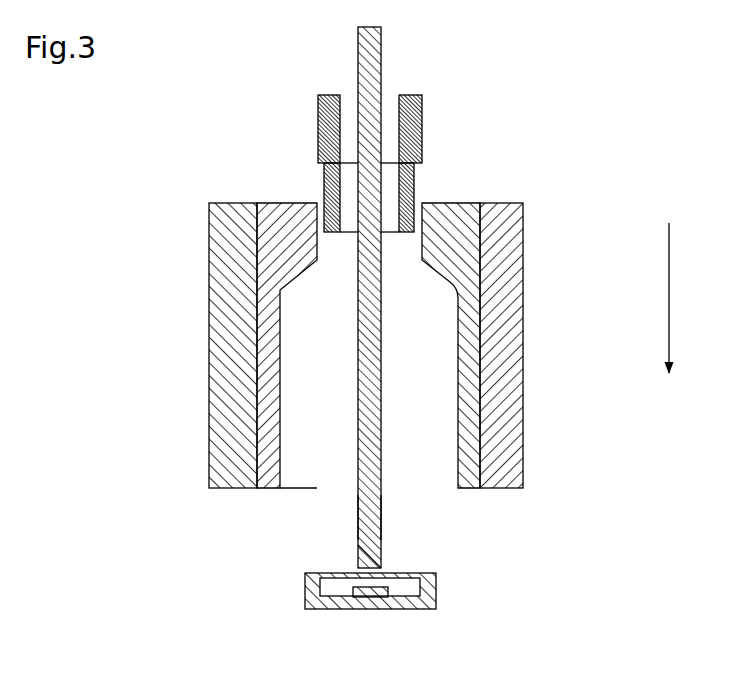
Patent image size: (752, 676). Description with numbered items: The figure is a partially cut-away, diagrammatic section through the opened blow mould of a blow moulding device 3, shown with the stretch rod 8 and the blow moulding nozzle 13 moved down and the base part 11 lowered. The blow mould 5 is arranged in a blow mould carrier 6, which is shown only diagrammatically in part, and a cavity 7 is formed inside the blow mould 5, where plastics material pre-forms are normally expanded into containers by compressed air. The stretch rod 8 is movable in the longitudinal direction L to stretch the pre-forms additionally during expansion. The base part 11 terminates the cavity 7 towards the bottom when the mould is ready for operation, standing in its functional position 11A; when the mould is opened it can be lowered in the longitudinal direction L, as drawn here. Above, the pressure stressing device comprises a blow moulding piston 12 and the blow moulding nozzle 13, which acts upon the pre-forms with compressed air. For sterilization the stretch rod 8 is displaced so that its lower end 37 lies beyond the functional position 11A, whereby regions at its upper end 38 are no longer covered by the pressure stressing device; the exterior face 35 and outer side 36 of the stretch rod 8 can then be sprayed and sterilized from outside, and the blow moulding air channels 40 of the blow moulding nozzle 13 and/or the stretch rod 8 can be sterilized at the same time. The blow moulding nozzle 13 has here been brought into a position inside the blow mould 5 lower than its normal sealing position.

The blow moulding device 3 is at (177, 152).
The blow mould 5 is at (458, 423).
The blow mould carrier 6 is at (523, 330).
The cavity 7 is at (403, 337).
The stretch rod 8 is at (360, 55).
The base part 11 is at (437, 588).
The functional position of the base part 11A is at (318, 495).
The blow moulding piston 12 is at (472, 103).
The blow moulding nozzle 13 is at (413, 183).
The exterior face 35 is at (358, 513).
The outer side 36 is at (383, 513).
The lower end 37 is at (358, 558).
The upper end 38 is at (327, 277).
The blow moulding air channels 40 is at (392, 122).
The longitudinal direction L is at (669, 297).